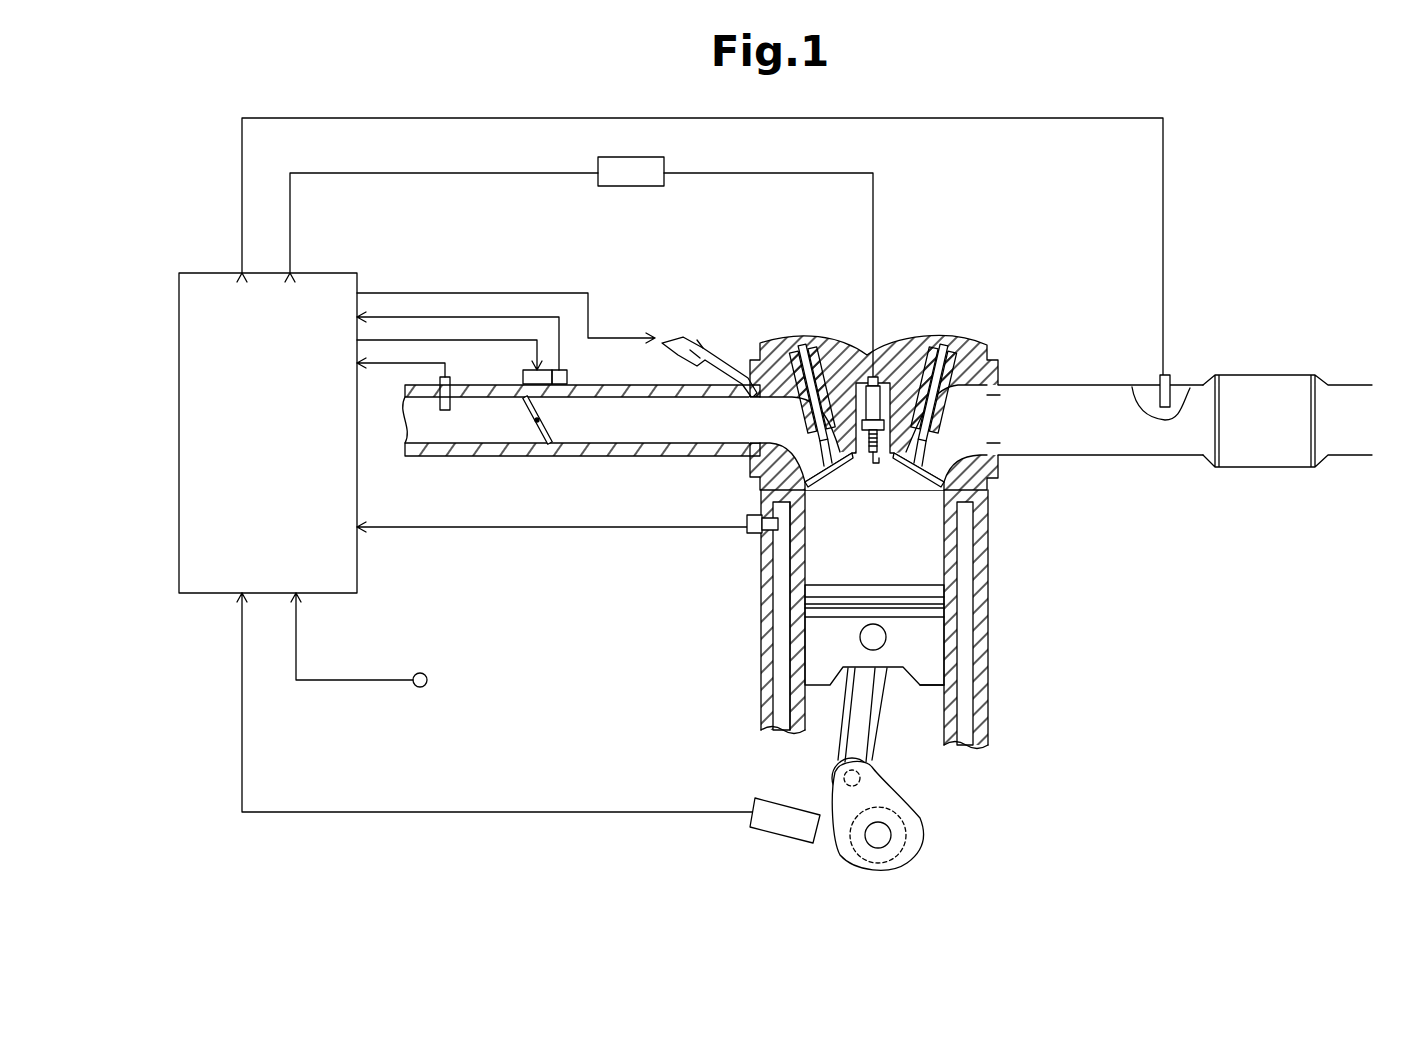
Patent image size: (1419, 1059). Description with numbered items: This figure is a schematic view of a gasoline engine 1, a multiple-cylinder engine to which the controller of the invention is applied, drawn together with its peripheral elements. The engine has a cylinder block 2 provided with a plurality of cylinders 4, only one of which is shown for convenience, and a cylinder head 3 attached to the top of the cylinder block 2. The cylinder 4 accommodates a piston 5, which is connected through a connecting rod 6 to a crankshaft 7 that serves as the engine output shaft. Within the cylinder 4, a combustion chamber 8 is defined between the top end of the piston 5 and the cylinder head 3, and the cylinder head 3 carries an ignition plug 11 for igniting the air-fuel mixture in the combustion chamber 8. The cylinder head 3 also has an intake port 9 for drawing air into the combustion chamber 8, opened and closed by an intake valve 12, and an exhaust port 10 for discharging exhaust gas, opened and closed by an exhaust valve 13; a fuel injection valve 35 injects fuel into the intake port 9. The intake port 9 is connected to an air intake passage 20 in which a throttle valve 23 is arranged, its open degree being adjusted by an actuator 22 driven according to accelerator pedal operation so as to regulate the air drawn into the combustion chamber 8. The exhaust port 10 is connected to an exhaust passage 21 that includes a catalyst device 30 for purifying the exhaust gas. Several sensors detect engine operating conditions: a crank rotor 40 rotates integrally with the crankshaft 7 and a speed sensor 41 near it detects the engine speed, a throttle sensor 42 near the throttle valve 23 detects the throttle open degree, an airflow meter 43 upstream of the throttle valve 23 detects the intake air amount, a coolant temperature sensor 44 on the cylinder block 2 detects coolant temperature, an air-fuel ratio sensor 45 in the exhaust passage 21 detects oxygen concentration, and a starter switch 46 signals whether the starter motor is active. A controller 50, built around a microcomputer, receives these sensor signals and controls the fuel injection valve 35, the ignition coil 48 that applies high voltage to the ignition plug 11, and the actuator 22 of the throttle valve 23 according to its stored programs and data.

The gasoline engine 1 is at (884, 594).
The cylinder block 2 is at (760, 600).
The cylinder head 3 is at (960, 340).
The cylinder 4 is at (802, 710).
The piston 5 is at (930, 682).
The connecting rod 6 is at (840, 745).
The crankshaft 7 is at (890, 780).
The combustion chamber 8 is at (915, 560).
The intake port 9 is at (760, 440).
The exhaust port 10 is at (1000, 410).
The ignition plug 11 is at (880, 385).
The intake valve 12 is at (836, 491).
The exhaust valve 13 is at (913, 491).
The air intake passage 20 is at (690, 456).
The exhaust passage 21 is at (1068, 383).
The actuator 22 is at (524, 372).
The throttle valve 23 is at (541, 446).
The catalyst device 30 is at (1232, 468).
The fuel injection valve 35 is at (682, 340).
The crank rotor 40 is at (905, 855).
The speed sensor 41 is at (755, 800).
The throttle sensor 42 is at (568, 376).
The airflow meter 43 is at (438, 380).
The coolant temperature sensor 44 is at (746, 532).
The air-fuel ratio sensor 45 is at (1158, 378).
The starter switch 46 is at (428, 676).
The ignition coil 48 is at (612, 188).
The controller 50 is at (357, 585).